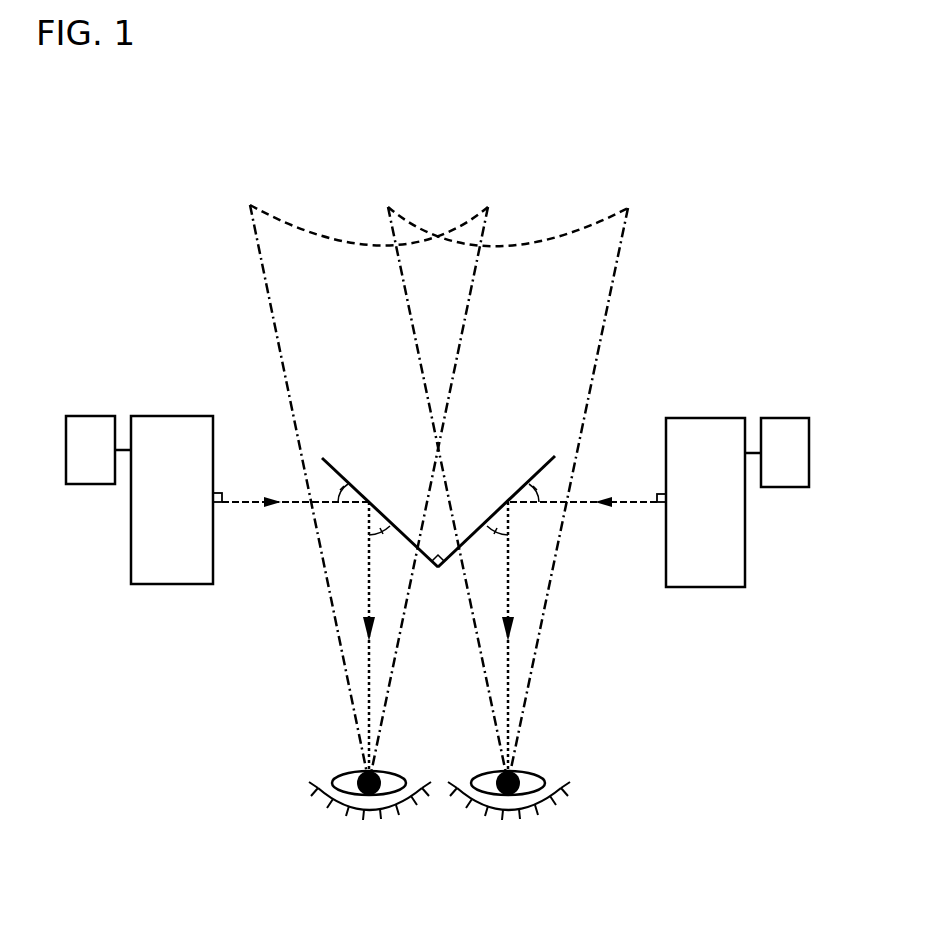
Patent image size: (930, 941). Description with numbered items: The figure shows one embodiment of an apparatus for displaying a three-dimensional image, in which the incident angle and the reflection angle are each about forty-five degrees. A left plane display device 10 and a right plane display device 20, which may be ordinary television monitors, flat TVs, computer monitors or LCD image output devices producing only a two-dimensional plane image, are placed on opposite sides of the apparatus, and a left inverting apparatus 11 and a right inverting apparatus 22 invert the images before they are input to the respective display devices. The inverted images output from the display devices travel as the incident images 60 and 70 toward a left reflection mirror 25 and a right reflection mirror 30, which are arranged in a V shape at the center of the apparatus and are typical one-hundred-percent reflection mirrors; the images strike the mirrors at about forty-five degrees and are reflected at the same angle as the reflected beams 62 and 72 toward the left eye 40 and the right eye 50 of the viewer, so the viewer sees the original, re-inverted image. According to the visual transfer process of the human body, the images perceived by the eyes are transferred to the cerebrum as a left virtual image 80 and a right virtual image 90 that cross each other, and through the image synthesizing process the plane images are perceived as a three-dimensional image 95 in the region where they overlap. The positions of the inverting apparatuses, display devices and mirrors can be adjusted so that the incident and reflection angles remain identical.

The left plane display device 10 is at (182, 420).
The left inverting apparatus 11 is at (80, 420).
The right plane display device 20 is at (693, 424).
The right inverting apparatus 22 is at (793, 424).
The left reflection mirror 25 is at (345, 457).
The right reflection mirror 30 is at (540, 457).
The left eye 40 is at (360, 815).
The right eye 50 is at (517, 815).
The incident image on left reflection mirror 60 is at (318, 507).
The first reflected light beam 62 is at (368, 665).
The incident image on right reflection mirror 70 is at (560, 507).
The second reflected light beam 72 is at (510, 665).
The left virtual image 80 is at (290, 233).
The right virtual image 90 is at (593, 230).
The three-dimensional image 95 is at (490, 207).